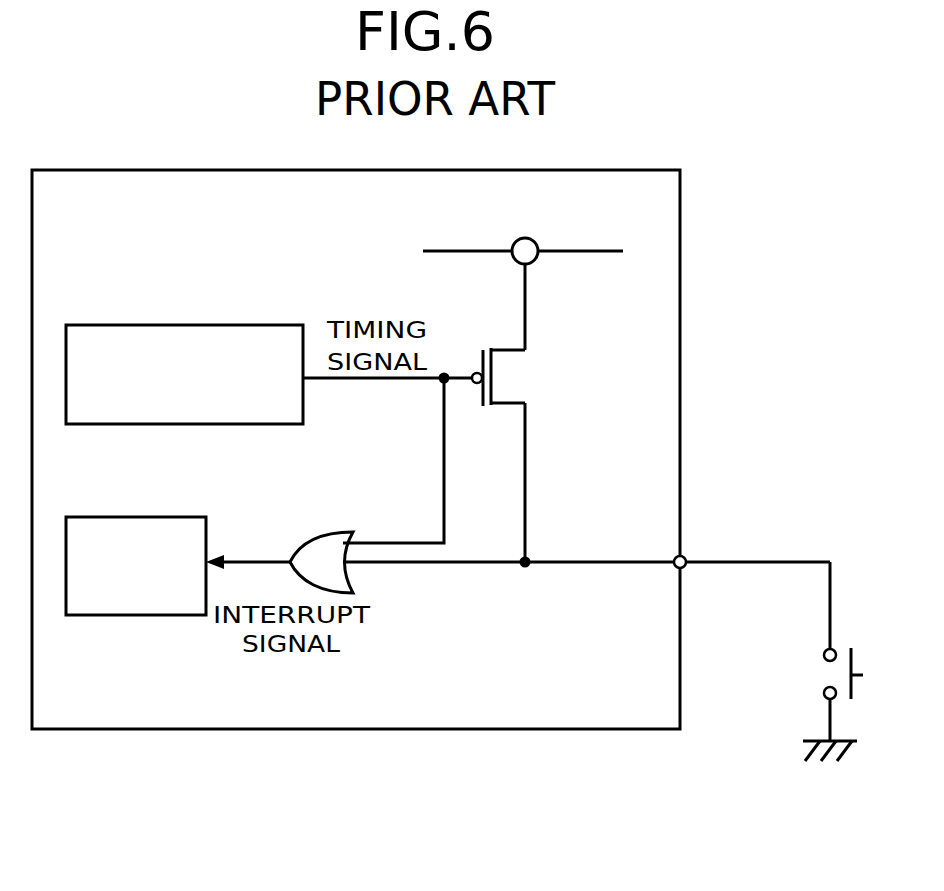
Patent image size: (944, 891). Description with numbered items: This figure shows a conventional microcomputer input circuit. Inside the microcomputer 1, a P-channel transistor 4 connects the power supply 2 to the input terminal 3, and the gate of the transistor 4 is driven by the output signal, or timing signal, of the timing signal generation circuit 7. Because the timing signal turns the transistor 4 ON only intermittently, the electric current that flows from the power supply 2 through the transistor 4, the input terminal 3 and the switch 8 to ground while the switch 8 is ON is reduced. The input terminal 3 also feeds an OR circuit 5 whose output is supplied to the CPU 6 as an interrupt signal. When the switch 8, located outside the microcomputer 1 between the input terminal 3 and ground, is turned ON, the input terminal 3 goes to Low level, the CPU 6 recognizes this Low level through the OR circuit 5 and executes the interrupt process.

The microcomputer 1 is at (640, 171).
The power supply 2 is at (536, 240).
The input terminal 3 is at (686, 557).
The P-channel transistor 4 is at (503, 380).
The OR circuit 5 is at (316, 534).
The CPU 6 is at (180, 517).
The timing signal generation circuit 7 is at (272, 325).
The switch 8 is at (830, 675).